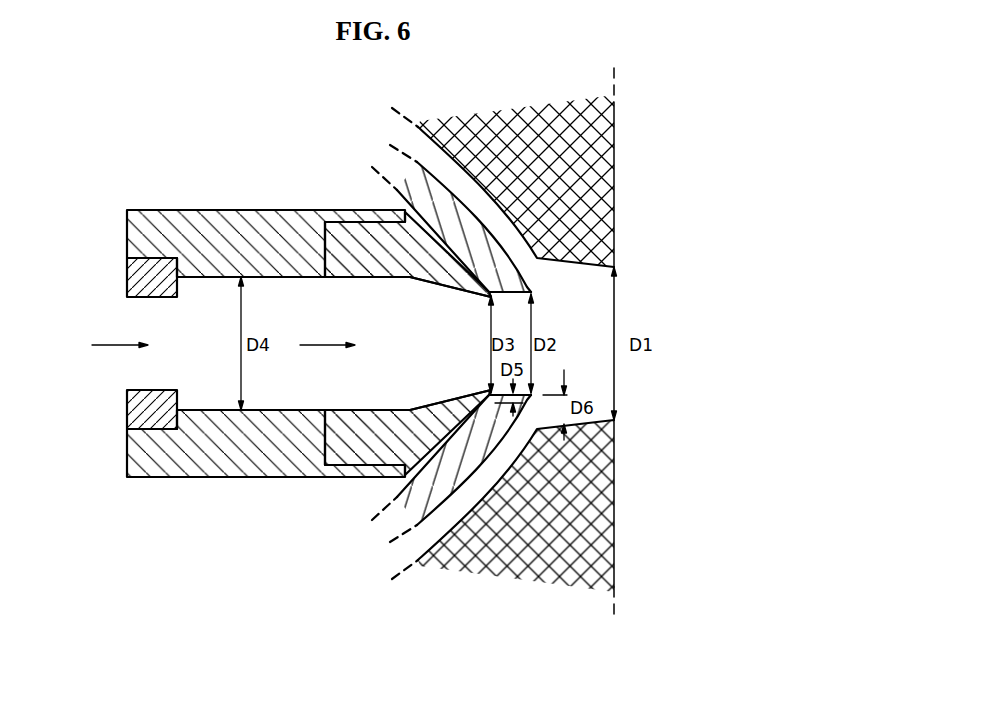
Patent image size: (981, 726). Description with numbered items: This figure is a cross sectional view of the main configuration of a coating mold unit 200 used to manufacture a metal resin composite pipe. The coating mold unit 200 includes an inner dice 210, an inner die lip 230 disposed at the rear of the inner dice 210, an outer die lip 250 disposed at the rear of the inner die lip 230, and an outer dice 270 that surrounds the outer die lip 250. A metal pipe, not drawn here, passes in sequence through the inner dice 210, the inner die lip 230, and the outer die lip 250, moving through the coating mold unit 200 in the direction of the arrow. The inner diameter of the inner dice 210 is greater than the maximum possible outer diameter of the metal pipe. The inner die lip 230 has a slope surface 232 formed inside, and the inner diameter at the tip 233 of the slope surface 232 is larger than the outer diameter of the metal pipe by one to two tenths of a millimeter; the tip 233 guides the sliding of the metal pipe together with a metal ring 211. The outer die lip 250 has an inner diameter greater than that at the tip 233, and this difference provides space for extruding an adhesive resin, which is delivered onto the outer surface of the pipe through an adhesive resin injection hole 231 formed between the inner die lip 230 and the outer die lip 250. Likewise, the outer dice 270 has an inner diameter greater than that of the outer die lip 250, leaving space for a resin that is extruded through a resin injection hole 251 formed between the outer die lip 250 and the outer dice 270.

The coating mold unit 200 is at (290, 607).
The inner dice 210 is at (233, 217).
The metal ring 211 is at (132, 278).
The inner die lip 230 is at (357, 232).
The adhesive resin injection hole 231 is at (472, 286).
The slope surface 232 is at (427, 284).
The tip 233 is at (489, 296).
The outer die lip 250 is at (413, 172).
The resin injection hole 251 is at (536, 412).
The outer dice 270 is at (609, 203).